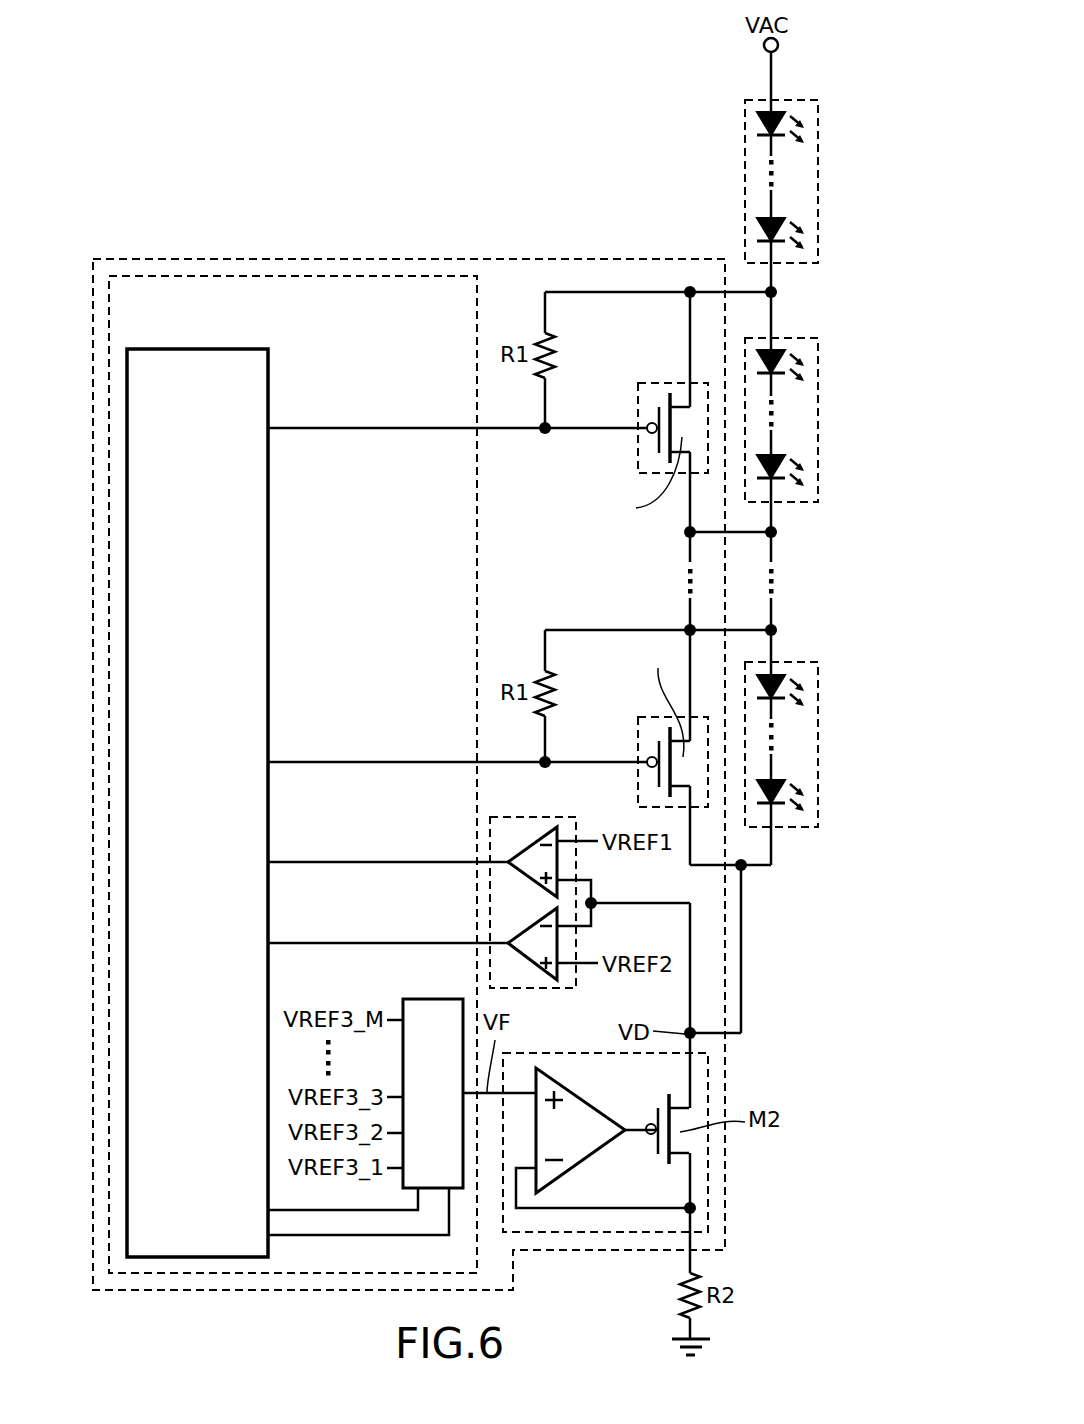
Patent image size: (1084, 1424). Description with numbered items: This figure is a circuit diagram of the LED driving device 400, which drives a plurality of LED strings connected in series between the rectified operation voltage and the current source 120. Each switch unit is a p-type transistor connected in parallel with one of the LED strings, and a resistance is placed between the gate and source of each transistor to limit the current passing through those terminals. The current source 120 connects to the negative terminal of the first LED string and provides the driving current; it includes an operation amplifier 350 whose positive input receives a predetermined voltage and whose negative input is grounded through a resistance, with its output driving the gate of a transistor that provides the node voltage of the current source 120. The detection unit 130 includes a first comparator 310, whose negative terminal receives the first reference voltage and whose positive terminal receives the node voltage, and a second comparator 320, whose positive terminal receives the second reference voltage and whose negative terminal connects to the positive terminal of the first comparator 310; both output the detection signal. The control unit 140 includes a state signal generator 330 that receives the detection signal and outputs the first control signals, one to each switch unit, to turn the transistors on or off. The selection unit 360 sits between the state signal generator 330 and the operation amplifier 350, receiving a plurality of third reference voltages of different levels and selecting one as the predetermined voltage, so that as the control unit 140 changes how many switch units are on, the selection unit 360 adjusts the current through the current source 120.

The LED driving device 400 is at (401, 257).
The control unit 140 is at (109, 480).
The state signal generator 330 is at (127, 677).
The selection unit 360 is at (433, 999).
The detection unit 130 is at (545, 881).
The first comparator 310 is at (533, 845).
The second comparator 320 is at (533, 925).
The current source 120 is at (605, 1114).
The operation amplifier 350 is at (580, 1163).